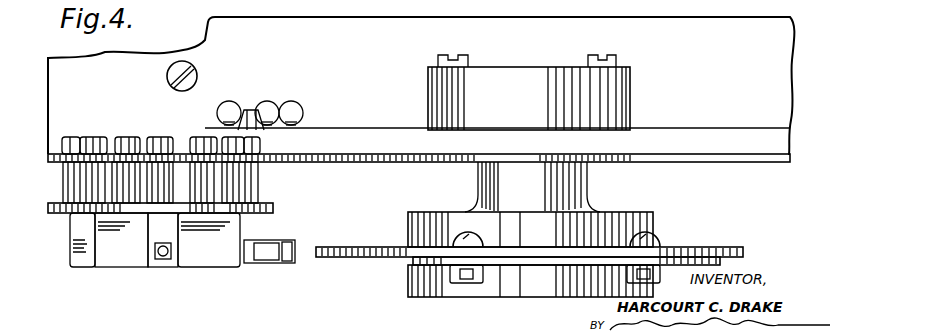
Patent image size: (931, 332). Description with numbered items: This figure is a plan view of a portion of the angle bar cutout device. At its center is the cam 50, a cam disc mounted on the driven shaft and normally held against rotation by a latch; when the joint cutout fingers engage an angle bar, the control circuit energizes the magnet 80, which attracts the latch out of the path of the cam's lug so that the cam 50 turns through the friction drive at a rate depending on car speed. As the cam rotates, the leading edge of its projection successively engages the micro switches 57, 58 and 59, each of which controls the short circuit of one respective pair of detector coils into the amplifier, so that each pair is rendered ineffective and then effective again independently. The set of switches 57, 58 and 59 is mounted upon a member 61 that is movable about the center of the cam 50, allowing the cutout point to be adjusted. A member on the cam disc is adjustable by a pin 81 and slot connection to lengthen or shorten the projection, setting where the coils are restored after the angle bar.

The cam 50 is at (381, 262).
The micro switch 57 is at (72, 266).
The micro switch 58 is at (134, 256).
The micro switch 59 is at (207, 256).
The member 61 is at (380, 163).
The magnet 80 is at (539, 283).
The pin 81 is at (470, 283).